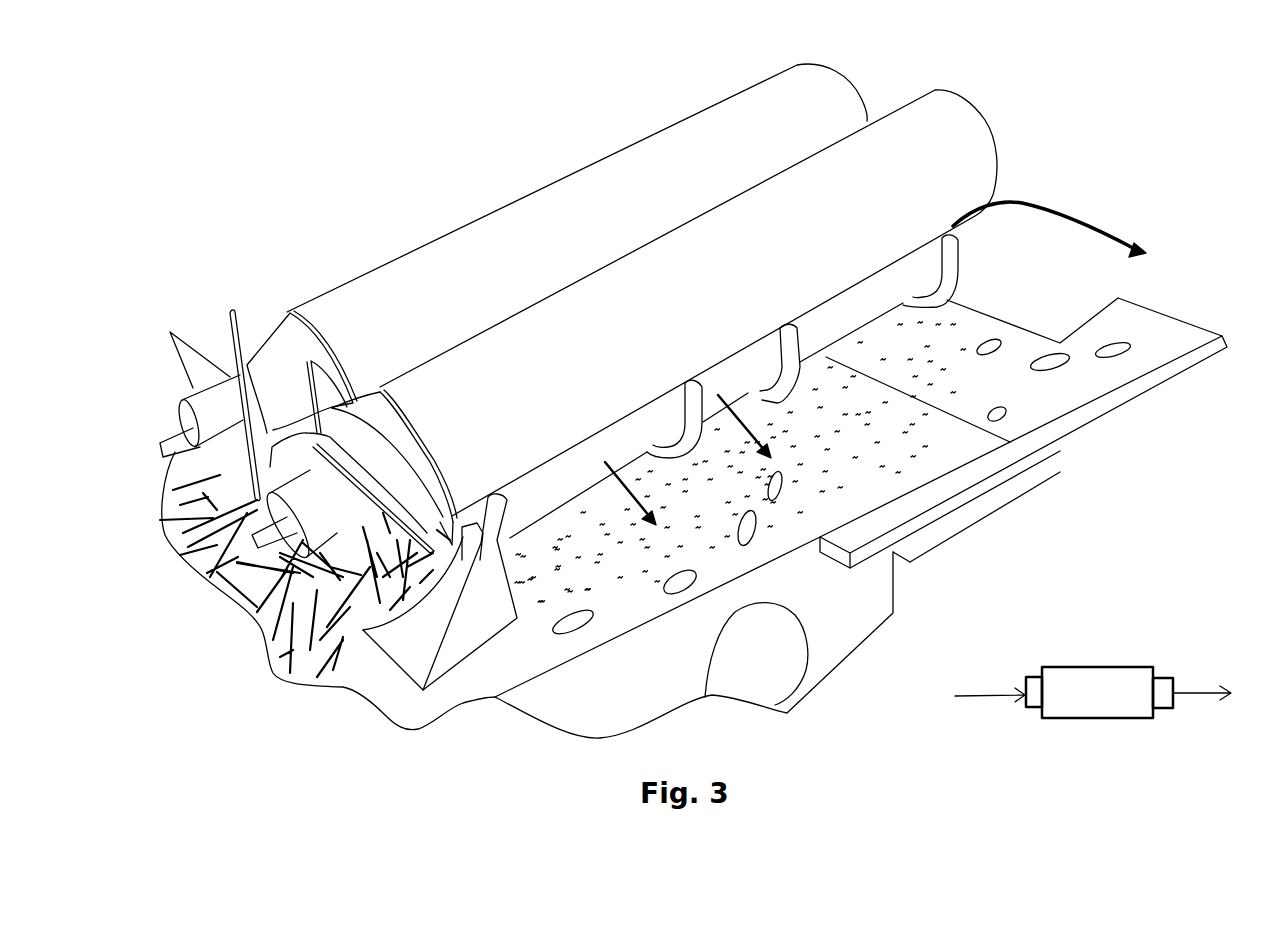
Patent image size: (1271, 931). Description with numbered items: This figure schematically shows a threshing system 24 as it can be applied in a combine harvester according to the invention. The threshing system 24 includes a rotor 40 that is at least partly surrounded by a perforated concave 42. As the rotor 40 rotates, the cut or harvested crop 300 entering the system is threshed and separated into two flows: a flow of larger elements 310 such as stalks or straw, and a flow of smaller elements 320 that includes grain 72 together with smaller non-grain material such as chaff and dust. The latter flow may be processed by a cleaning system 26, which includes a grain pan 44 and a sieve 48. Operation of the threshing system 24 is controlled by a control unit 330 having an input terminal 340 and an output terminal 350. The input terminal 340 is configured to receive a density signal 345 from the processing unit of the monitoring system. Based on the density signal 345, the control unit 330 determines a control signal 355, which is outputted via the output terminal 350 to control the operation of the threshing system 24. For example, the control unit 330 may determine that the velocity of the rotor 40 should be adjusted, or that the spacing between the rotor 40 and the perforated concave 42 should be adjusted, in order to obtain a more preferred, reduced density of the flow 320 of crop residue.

The threshing system 24 is at (343, 247).
The cleaning system 26 is at (1020, 541).
The rotor 40 is at (175, 438).
The perforated concave 42 is at (637, 406).
The grain pan 44 is at (633, 635).
The sieve 48 is at (1180, 367).
The grain 72 is at (1120, 350).
The cut or harvested crop 300 is at (236, 597).
The flow of larger elements 310 is at (603, 460).
The flow of smaller elements 320 is at (1058, 207).
The control unit 330 is at (1097, 675).
The input terminal 340 is at (1032, 678).
The density signal 345 is at (977, 696).
The output terminal 350 is at (1163, 680).
The control signal 355 is at (1210, 690).